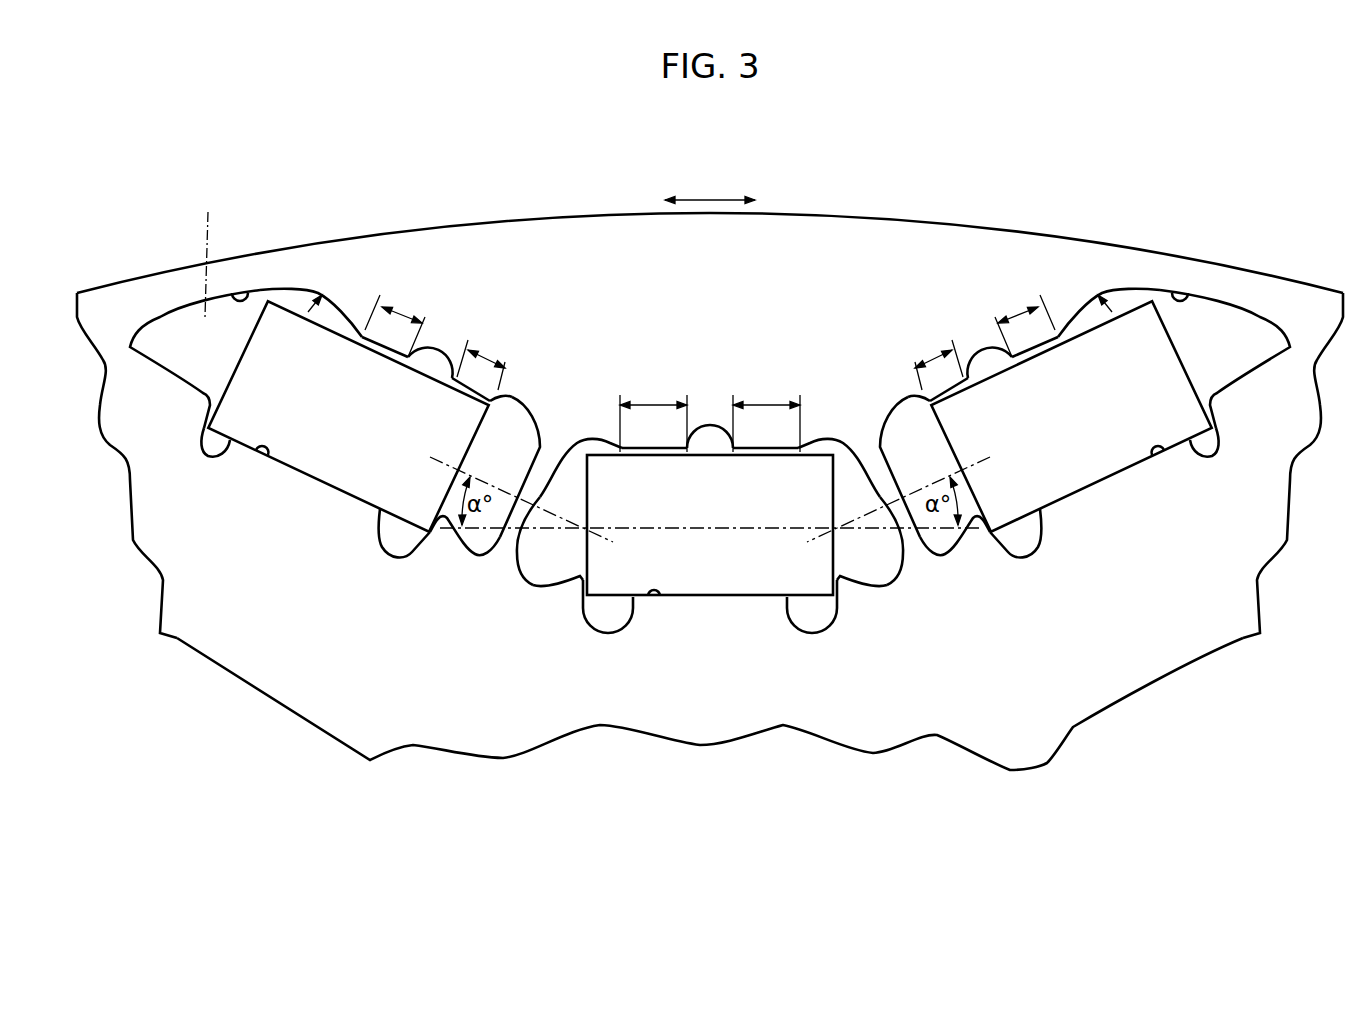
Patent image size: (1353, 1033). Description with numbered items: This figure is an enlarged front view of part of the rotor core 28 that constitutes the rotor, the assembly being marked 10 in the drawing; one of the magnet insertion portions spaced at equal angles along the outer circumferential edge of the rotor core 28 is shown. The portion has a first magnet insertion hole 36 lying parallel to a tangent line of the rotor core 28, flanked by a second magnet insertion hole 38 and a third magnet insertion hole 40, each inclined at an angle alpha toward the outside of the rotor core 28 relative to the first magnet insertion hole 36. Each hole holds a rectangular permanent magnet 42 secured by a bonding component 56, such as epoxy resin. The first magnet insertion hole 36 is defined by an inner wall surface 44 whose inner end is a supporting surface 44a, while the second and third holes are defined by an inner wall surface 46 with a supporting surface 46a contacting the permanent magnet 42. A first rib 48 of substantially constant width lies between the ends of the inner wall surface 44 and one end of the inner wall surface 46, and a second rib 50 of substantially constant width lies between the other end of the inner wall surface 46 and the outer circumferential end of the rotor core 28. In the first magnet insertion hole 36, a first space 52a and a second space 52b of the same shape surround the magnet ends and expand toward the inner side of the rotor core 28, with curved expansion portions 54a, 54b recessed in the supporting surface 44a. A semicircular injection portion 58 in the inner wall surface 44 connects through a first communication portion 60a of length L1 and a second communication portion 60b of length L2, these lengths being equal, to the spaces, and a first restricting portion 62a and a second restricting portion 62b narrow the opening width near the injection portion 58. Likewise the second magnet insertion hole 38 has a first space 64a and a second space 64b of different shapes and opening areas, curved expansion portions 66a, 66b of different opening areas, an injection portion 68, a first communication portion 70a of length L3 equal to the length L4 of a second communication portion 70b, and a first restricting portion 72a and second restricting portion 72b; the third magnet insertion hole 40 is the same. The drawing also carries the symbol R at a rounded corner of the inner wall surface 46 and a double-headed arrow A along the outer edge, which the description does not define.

The rotor 10 is at (1007, 163).
The rotor core 28 is at (875, 212).
The first magnet insertion hole 36 is at (827, 438).
The second magnet insertion hole 38 is at (532, 393).
The third magnet insertion hole 40 is at (885, 405).
The permanent magnet 42 is at (368, 490).
The inner wall surface 44 is at (572, 445).
The supporting surface 44a is at (655, 590).
The inner wall surface 46 is at (242, 298).
The supporting surface 46a is at (267, 457).
The first rib 48 is at (527, 513).
The second rib 50 is at (175, 287).
The first space 52a is at (552, 573).
The second space 52b is at (868, 573).
The curved expansion portion 54a is at (602, 623).
The curved expansion portion 54b is at (818, 623).
The bonding component 56 is at (207, 250).
The injection portion 58 is at (710, 437).
The first communication portion 60a is at (638, 450).
The second communication portion 60b is at (785, 450).
The first restricting portion 62a is at (621, 450).
The second restricting portion 62b is at (799, 450).
The first space 64a is at (487, 520).
The second space 64b is at (168, 365).
The curved expansion portion 66a is at (397, 545).
The curved expansion portion 66b is at (212, 457).
The injection portion 68 is at (440, 350).
The first communication portion 70a is at (494, 398).
The second communication portion 70b is at (388, 348).
The first restricting portion 72a is at (493, 403).
The second restricting portion 72b is at (362, 339).
The length of first communication portion L1 is at (653, 413).
The length of second communication portion L2 is at (766, 413).
The length of first communication portion L3 is at (710, 360).
The length of second communication portion L4 is at (710, 323).
The radius R is at (709, 300).
The circumferential direction A is at (710, 186).